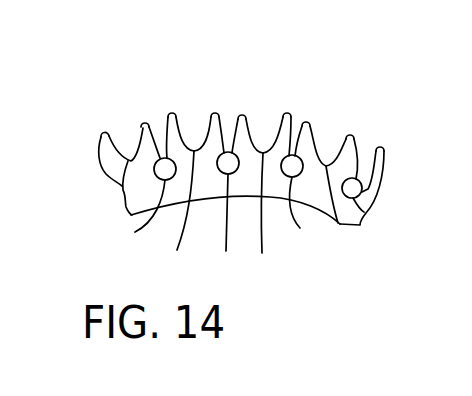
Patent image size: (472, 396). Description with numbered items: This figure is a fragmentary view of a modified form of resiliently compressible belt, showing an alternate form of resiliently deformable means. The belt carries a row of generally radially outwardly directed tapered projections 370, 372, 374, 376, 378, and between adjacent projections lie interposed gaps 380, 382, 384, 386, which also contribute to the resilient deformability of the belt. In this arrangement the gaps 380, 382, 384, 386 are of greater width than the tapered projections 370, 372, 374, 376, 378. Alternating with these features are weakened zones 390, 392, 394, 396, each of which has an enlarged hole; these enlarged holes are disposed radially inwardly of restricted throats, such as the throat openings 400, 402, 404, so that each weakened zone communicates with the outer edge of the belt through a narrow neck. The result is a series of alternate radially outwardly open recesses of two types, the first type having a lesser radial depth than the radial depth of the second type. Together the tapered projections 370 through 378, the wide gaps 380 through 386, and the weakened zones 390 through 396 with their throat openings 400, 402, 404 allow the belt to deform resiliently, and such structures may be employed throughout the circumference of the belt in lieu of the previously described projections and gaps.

The tapered projection 370 is at (173, 116).
The tapered projection 372 is at (218, 112).
The tapered projection 374 is at (243, 120).
The tapered projection 376 is at (282, 123).
The tapered projection 378 is at (307, 135).
The gap 380 is at (122, 191).
The gap 382 is at (165, 206).
The gap 384 is at (284, 212).
The gap 386 is at (340, 220).
The weakened zone 390 is at (130, 213).
The weakened zone 392 is at (207, 222).
The weakened zone 394 is at (311, 210).
The weakened zone 396 is at (363, 206).
The throat opening 400 is at (162, 135).
The throat opening 402 is at (232, 118).
The throat opening 404 is at (298, 140).